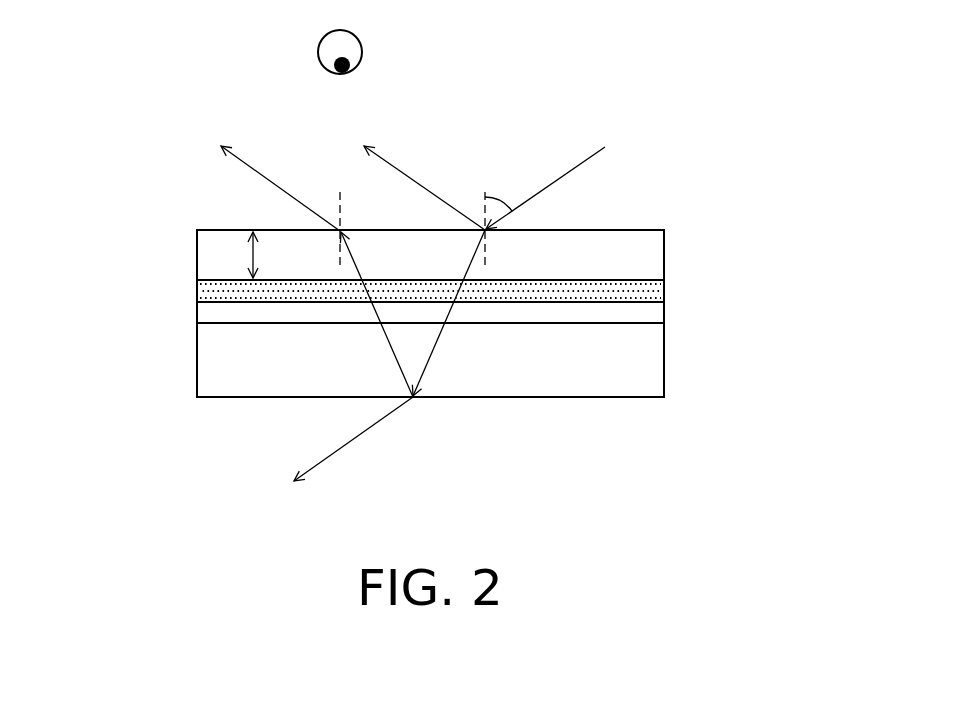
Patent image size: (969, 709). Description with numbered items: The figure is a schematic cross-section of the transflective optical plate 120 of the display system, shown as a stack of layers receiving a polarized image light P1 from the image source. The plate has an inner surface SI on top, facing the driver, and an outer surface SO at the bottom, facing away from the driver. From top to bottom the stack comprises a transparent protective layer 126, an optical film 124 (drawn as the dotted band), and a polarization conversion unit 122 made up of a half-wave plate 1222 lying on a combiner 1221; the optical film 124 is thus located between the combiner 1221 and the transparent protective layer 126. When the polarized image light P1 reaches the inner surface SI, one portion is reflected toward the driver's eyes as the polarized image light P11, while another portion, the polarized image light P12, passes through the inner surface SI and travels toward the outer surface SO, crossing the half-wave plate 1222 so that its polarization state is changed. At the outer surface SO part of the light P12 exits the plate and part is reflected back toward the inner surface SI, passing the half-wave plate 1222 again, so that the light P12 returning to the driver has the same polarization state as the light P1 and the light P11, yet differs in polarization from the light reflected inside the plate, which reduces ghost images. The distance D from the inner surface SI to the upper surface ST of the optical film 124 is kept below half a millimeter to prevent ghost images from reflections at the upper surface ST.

The transflective optical plate 120 is at (508, 355).
The polarization conversion unit 122 is at (508, 349).
The combiner 1221 is at (645, 362).
The half-wave plate 1222 is at (632, 313).
The optical film 124 is at (642, 292).
The transparent protective layer 126 is at (642, 265).
The inner surface SI is at (214, 228).
The upper surface of the optical film ST is at (221, 277).
The outer surface SO is at (214, 399).
The distance D is at (265, 255).
The polarized image light P1 is at (572, 167).
The polarized image light P11 is at (417, 182).
The polarized image light P12 is at (265, 173).